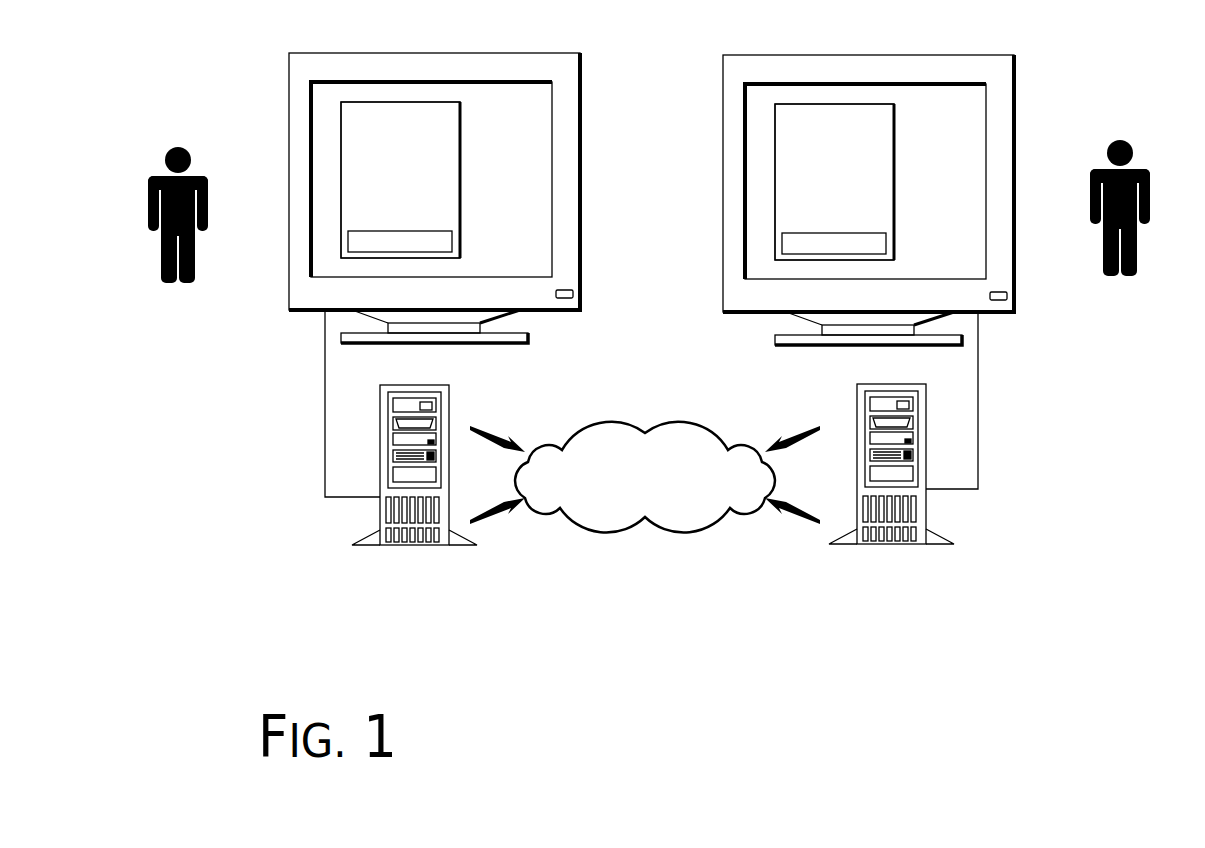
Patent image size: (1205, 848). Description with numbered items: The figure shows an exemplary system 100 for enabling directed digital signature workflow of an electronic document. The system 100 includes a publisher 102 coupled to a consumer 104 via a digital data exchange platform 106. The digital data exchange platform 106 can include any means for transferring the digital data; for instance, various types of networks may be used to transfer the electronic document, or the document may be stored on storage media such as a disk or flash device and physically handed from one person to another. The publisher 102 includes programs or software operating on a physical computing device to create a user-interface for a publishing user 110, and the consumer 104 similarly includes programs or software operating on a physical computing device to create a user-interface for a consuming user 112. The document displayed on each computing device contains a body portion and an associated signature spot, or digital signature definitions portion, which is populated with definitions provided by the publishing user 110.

The system 100 is at (208, 34).
The publisher 102 is at (434, 281).
The consumer 104 is at (868, 280).
The digital data exchange platform 106 is at (645, 477).
The publishing user 110 is at (195, 238).
The consuming user 112 is at (1120, 237).